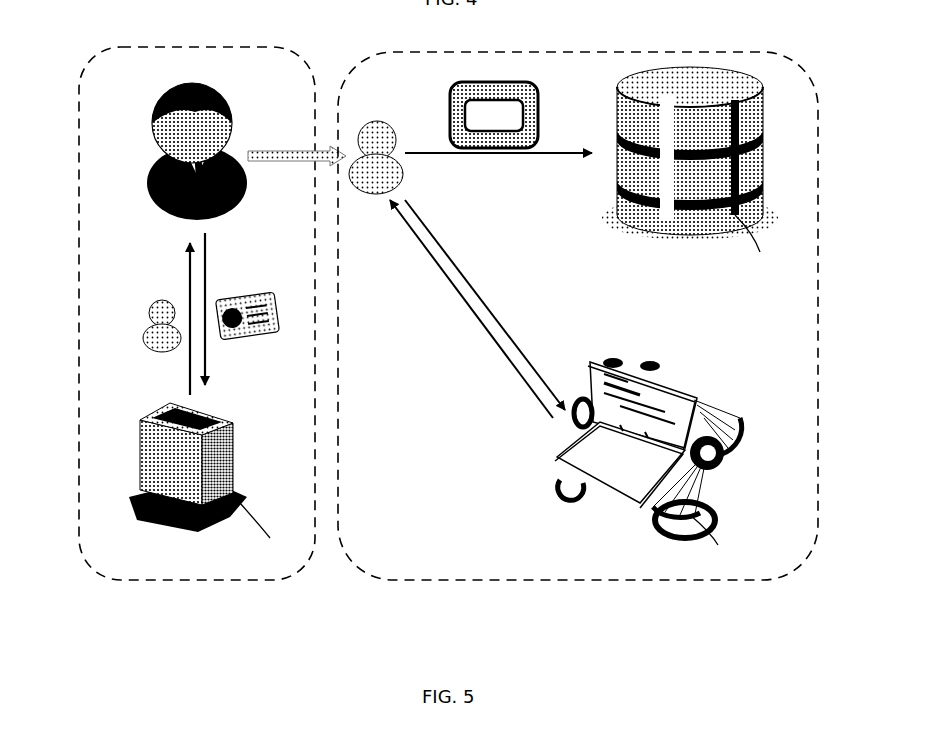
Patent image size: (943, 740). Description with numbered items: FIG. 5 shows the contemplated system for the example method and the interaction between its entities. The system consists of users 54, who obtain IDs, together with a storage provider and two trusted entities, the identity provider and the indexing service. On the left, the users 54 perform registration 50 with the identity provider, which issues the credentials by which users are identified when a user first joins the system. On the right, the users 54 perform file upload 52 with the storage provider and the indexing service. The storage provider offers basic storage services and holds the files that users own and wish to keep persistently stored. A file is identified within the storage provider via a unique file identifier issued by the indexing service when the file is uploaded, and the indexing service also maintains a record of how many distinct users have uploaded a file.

The registration 50 is at (200, 580).
The file upload 52 is at (575, 580).
The users 54 is at (152, 122).